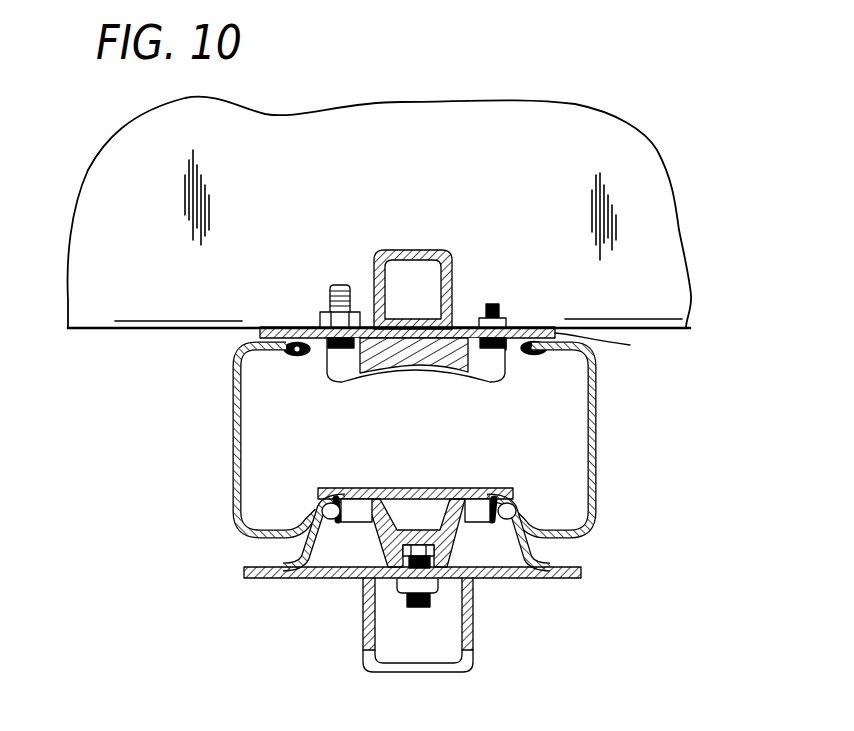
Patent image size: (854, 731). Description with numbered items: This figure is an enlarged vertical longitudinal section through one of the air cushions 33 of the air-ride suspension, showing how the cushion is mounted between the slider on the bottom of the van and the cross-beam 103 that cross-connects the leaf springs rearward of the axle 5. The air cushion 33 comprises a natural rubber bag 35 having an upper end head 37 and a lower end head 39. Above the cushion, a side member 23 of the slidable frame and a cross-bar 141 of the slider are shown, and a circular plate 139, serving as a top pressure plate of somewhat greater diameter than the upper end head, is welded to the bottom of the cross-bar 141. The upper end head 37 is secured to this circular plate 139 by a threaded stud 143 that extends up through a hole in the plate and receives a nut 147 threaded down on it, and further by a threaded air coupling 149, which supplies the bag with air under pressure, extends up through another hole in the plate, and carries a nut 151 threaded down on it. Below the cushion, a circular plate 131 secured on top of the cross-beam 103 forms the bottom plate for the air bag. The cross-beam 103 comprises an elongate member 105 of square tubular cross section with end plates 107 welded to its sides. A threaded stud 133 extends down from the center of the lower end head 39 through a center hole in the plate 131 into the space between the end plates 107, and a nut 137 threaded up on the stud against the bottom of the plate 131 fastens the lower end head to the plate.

The axle 5 is at (648, 155).
The side member 23 is at (658, 226).
The circular plate 139 is at (479, 347).
The cross-bar 141 is at (407, 250).
The threaded air coupling 149 is at (335, 285).
The nut 151 is at (320, 317).
The threaded stud 143 is at (490, 304).
The nut 147 is at (507, 318).
The upper end head 37 is at (468, 378).
The air cushion 33 is at (454, 440).
The natural rubber bag 35 is at (595, 449).
The lower end head 39 is at (496, 449).
The circular plate 131 is at (572, 568).
The cross-beam 103 is at (414, 643).
The elongate member 105 is at (423, 673).
The end plate 107 is at (414, 643).
The threaded stud 133 is at (413, 608).
The nut 137 is at (396, 593).